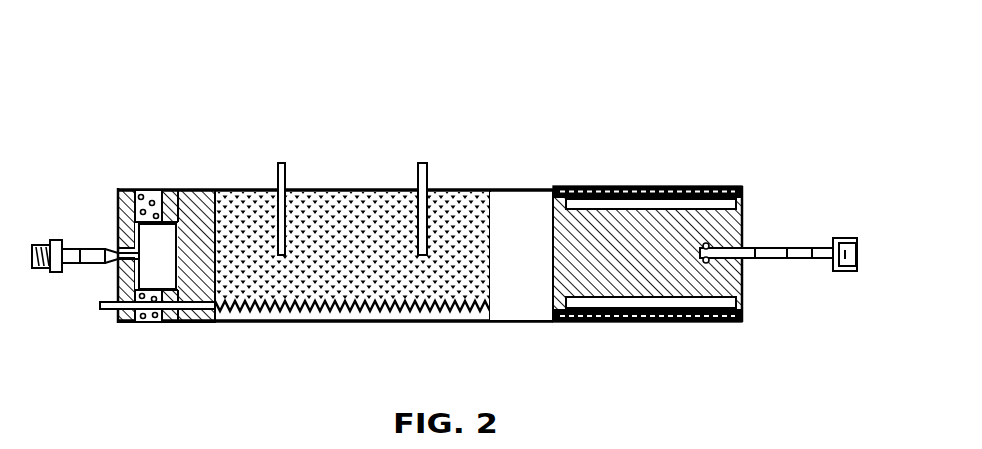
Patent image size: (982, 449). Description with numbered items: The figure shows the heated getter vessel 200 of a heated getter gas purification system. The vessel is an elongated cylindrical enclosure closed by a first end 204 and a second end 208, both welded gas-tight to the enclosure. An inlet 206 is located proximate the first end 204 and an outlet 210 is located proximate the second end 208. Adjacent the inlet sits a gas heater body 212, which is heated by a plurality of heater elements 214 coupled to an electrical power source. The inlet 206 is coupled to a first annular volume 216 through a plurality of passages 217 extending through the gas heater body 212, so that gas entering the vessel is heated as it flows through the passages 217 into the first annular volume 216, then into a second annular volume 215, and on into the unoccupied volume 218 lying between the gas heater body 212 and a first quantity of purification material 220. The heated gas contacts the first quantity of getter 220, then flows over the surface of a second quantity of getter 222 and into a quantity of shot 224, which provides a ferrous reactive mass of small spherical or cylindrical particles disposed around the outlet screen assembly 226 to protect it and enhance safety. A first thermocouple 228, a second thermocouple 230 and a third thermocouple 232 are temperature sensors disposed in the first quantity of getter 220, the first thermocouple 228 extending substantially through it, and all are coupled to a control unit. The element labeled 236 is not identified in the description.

The heated getter vessel 200 is at (228, 74).
The first end 204 is at (745, 290).
The inlet 206 is at (858, 253).
The second end 208 is at (118, 190).
The outlet 210 is at (35, 248).
The gas heater body 212 is at (593, 192).
The heater elements 214 is at (648, 200).
The second annular volume 215 is at (655, 322).
The first annular volume 216 is at (708, 186).
The passages 217 is at (743, 222).
The unoccupied volume 218 is at (530, 300).
The first quantity of purification material 220 is at (440, 300).
The second quantity of purification material 222 is at (188, 320).
The shot 224 is at (142, 193).
The outlet screen assembly 226 is at (169, 221).
The first thermocouple 228 is at (104, 309).
The second thermocouple 230 is at (418, 168).
The third thermocouple 232 is at (286, 172).
The propellant charge face 236 is at (492, 232).